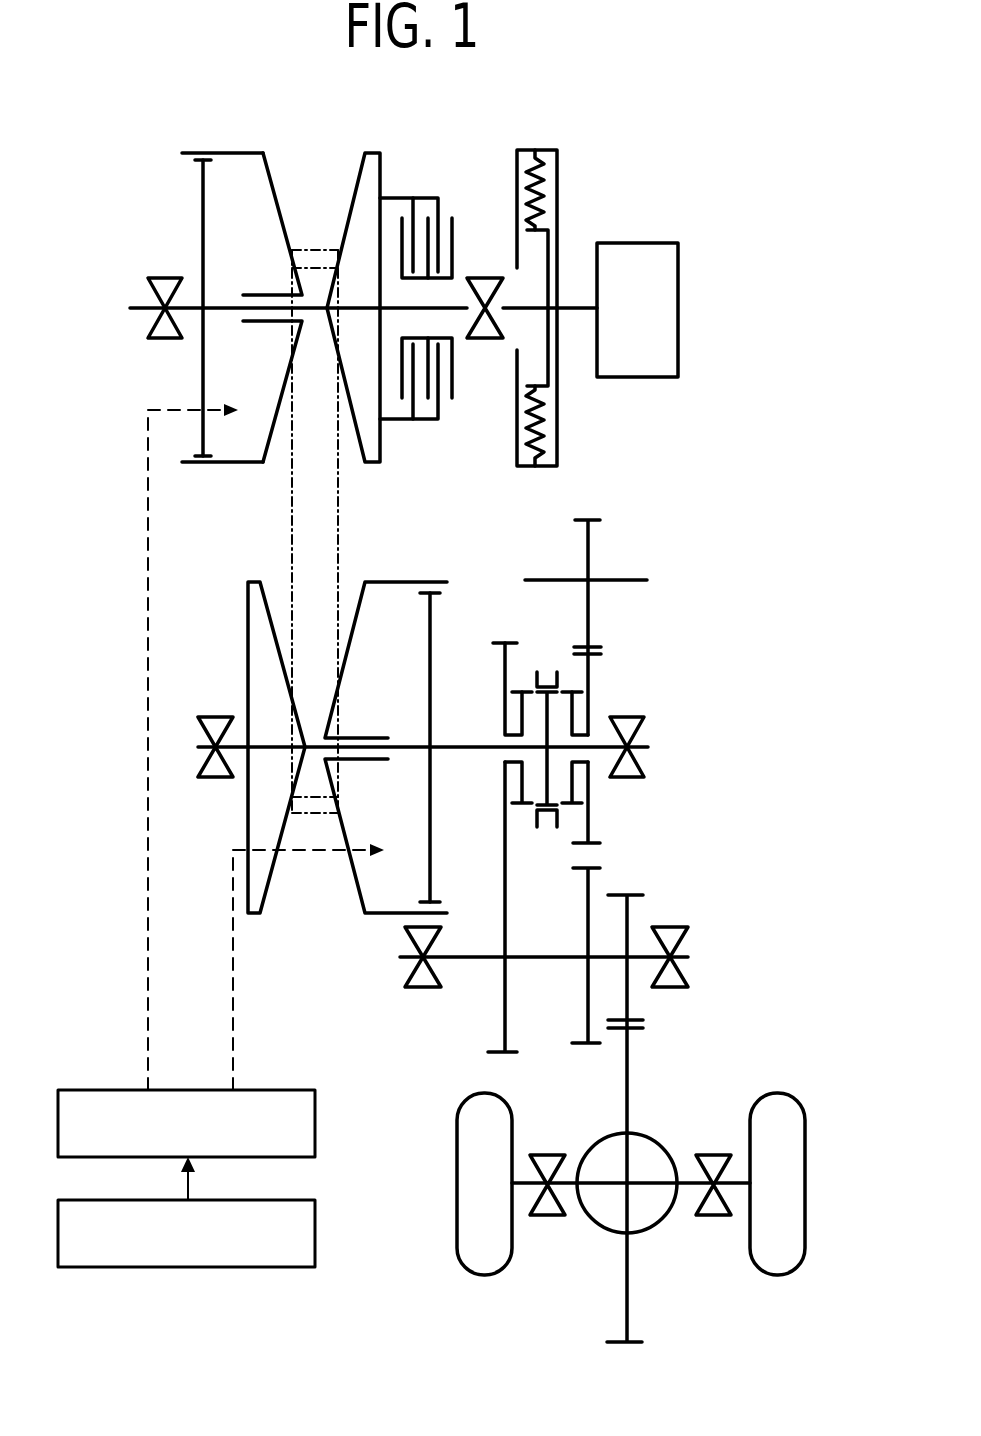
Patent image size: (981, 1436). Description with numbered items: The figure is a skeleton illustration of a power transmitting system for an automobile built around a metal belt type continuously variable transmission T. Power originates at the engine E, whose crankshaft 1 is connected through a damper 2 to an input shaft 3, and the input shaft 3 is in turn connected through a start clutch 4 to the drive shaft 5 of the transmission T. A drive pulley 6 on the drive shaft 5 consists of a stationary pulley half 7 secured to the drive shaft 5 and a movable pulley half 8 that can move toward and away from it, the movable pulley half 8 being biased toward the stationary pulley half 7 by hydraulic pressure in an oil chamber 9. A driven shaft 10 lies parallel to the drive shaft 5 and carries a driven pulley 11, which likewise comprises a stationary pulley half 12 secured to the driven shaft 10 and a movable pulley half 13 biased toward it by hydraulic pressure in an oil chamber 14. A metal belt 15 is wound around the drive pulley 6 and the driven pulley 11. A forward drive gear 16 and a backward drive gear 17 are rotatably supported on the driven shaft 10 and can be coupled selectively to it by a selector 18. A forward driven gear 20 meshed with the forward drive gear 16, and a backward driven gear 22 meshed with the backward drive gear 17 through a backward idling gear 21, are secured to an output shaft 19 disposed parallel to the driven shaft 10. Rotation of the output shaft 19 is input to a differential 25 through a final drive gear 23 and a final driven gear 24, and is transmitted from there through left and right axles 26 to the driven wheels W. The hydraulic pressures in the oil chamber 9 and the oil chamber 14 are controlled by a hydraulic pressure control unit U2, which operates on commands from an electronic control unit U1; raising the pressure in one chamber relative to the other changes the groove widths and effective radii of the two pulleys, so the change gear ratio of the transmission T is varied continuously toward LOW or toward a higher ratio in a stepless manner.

The crankshaft 1 is at (575, 315).
The damper 2 is at (570, 187).
The input shaft 3 is at (505, 310).
The start clutch 4 is at (430, 186).
The drive shaft 5 is at (218, 305).
The drive pulley 6 is at (305, 198).
The stationary pulley half 7 is at (365, 185).
The movable pulley half 8 is at (268, 186).
The oil chamber 9 is at (258, 383).
The driven shaft 10 is at (480, 750).
The driven pulley 11 is at (321, 899).
The stationary pulley half 12 is at (250, 620).
The movable pulley half 13 is at (360, 613).
The oil chamber 14 is at (390, 833).
The metal belt 15 is at (340, 536).
The forward drive gear 16 is at (498, 643).
The backward drive gear 17 is at (598, 655).
The selector 18 is at (543, 828).
The output shaft 19 is at (527, 957).
The forward driven gear 20 is at (510, 1053).
The backward idling gear 21 is at (597, 520).
The backward driven gear 22 is at (580, 1045).
The final drive gear 23 is at (633, 895).
The final driven gear 24 is at (635, 1030).
The differential 25 is at (655, 1145).
The axle 26 is at (566, 1186).
The metal belt type continuously variable transmission T is at (238, 518).
The engine E is at (650, 321).
The driven wheel W is at (457, 1245).
The electronic control unit U1 is at (318, 1217).
The hydraulic pressure control unit U2 is at (318, 1113).